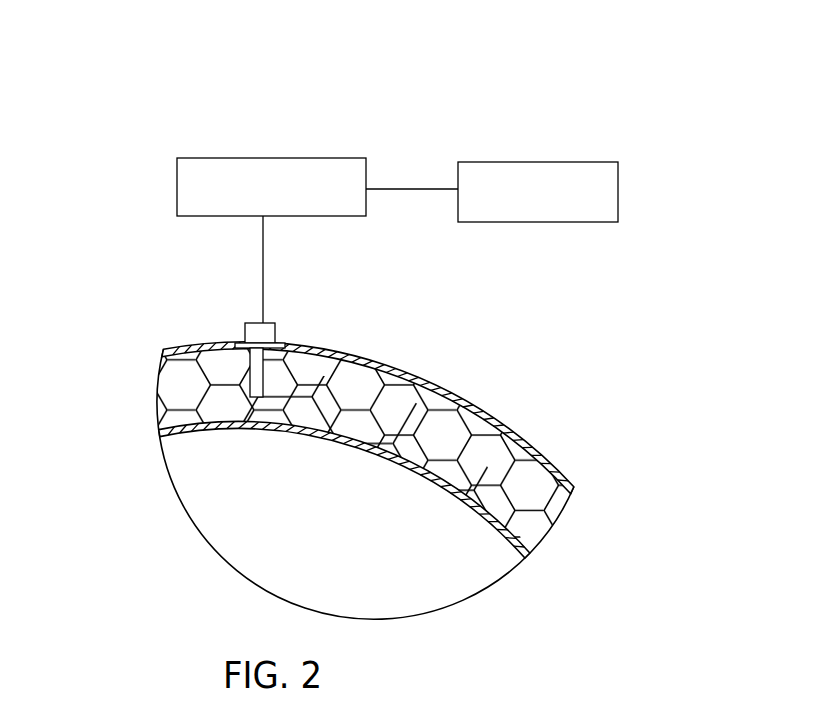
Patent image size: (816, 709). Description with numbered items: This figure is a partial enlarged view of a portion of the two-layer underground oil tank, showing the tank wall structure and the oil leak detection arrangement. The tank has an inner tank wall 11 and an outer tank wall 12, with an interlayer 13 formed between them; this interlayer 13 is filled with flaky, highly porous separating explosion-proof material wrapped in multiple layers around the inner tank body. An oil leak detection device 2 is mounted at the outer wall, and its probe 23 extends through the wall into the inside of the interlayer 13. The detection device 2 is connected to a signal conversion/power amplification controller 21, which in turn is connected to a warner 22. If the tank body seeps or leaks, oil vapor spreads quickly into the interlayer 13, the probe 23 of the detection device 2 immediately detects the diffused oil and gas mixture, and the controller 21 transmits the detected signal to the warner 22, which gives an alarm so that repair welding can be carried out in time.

The detection device 2 is at (156, 274).
The inner tank wall 11 is at (530, 553).
The outer tank wall 12 is at (450, 393).
The interlayer 13 is at (530, 485).
The signal conversion/power amplification controller 21 is at (335, 168).
The warner 22 is at (590, 172).
The probe 23 is at (253, 380).